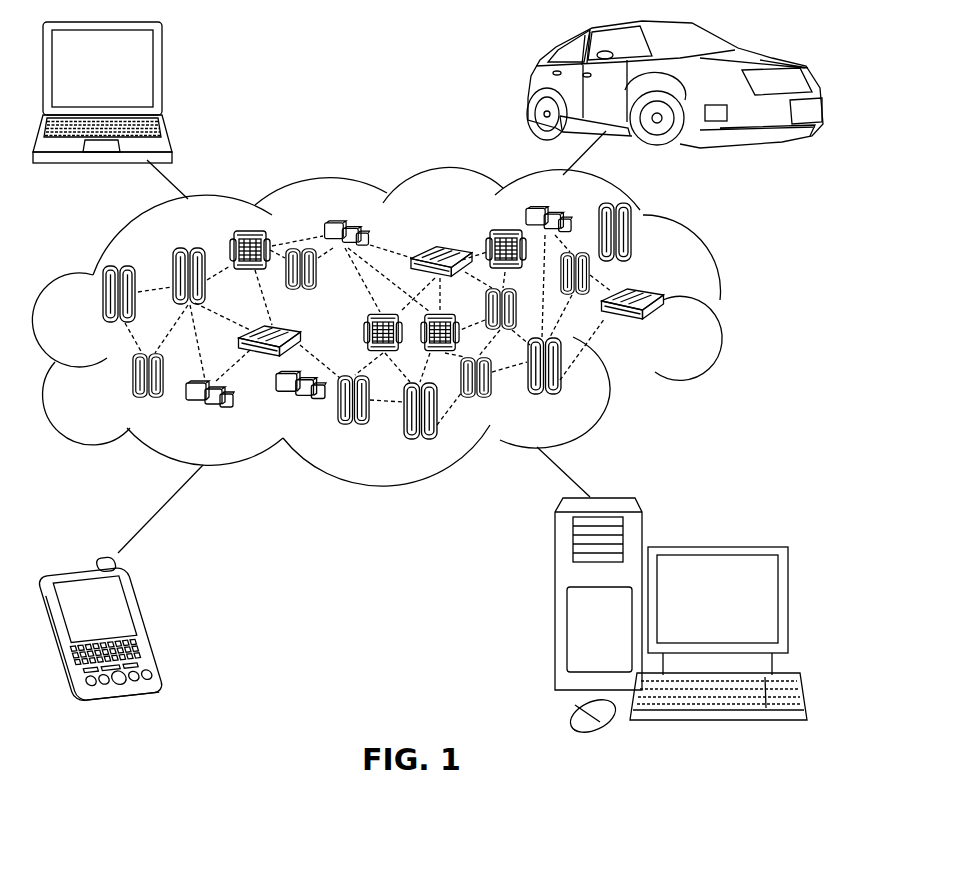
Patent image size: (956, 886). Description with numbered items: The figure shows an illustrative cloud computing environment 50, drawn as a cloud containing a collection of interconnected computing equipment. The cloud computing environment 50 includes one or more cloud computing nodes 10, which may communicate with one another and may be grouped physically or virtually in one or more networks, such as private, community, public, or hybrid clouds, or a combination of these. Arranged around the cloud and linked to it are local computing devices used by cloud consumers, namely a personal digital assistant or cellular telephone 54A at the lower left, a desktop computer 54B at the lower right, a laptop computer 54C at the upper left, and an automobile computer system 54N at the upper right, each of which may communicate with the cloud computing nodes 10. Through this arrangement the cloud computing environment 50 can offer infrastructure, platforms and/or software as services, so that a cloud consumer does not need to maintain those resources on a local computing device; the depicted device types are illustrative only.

The cloud computing node 10 is at (676, 332).
The cloud computing environment 50 is at (720, 303).
The personal digital assistant (PDA) or cellular telephone 54A is at (152, 628).
The desktop computer 54B is at (716, 548).
The laptop computer 54C is at (163, 72).
The automobile computer system 54N is at (532, 88).